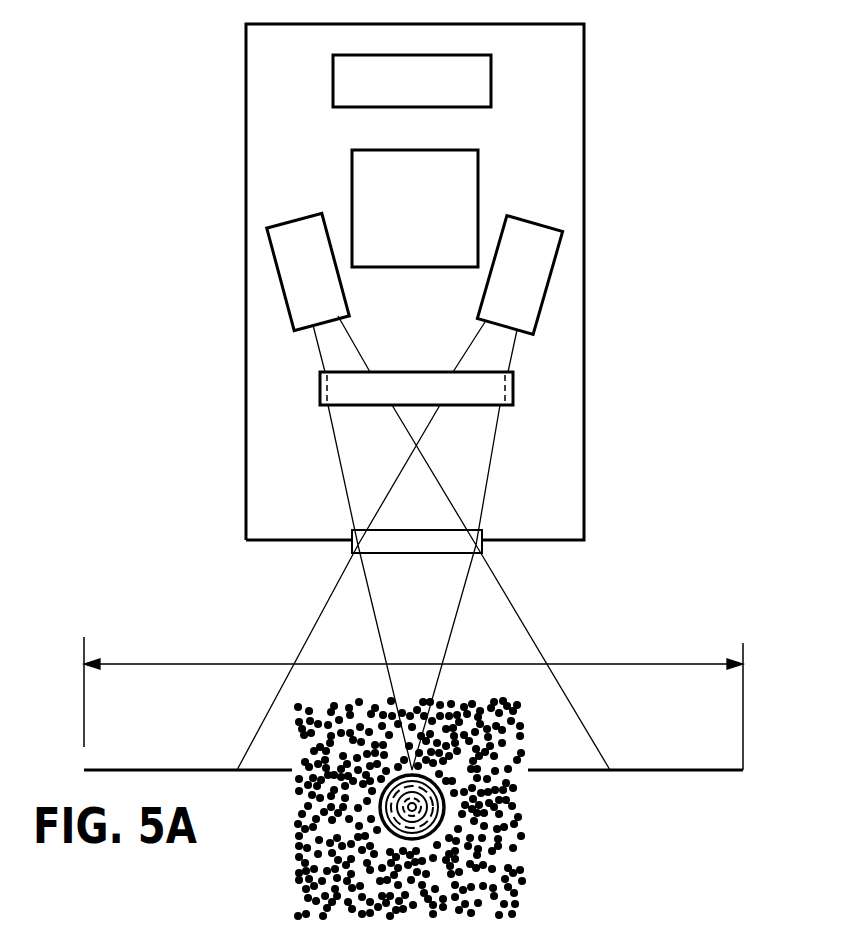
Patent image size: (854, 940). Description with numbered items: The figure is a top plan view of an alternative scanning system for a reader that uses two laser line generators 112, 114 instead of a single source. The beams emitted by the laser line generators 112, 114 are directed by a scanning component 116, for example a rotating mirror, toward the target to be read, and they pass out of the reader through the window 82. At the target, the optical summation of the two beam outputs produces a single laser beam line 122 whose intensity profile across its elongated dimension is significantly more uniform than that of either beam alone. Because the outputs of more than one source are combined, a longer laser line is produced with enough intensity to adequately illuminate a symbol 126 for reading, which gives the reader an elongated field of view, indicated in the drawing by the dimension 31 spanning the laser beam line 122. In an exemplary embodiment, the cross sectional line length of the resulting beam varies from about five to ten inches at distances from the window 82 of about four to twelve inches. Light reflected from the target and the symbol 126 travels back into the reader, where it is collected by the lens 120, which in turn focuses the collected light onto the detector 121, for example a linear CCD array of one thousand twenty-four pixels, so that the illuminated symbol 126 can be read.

The detector 121 is at (491, 80).
The lens 120 is at (478, 176).
The laser line generator 112 is at (350, 291).
The laser line generator 114 is at (477, 312).
The scanning component 116 is at (320, 386).
The window 82 is at (482, 532).
The field of view width 31 is at (640, 664).
The laser beam line 122 is at (680, 772).
The symbol 126 is at (541, 838).